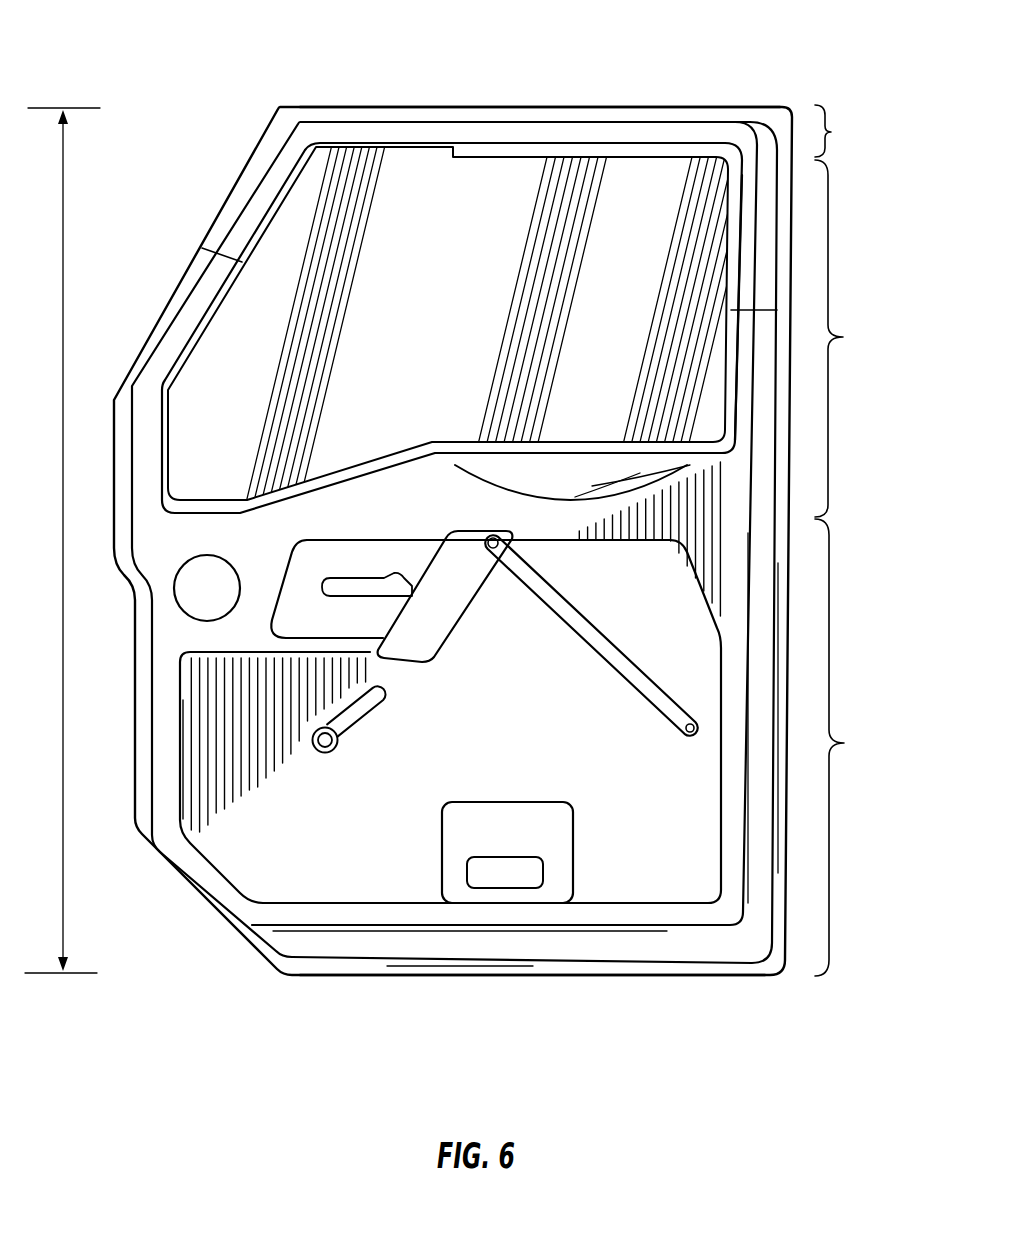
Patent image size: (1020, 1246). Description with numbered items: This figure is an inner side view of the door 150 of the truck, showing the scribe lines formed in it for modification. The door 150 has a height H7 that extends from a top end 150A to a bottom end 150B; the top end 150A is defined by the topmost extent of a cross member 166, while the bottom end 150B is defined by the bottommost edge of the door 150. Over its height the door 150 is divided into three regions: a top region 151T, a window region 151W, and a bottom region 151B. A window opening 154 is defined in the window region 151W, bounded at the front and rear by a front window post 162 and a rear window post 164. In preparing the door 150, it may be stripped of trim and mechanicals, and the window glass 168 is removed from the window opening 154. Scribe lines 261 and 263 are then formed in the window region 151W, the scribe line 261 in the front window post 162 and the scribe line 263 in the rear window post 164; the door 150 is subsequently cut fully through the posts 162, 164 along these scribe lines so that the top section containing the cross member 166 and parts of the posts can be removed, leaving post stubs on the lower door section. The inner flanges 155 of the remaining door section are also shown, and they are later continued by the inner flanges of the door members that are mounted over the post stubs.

The door 150 is at (271, 58).
The top end 150A is at (580, 103).
The bottom end 150B is at (505, 975).
The top region 151T is at (851, 131).
The window region 151W is at (860, 338).
The bottom region 151B is at (857, 747).
The window opening 154 is at (507, 424).
The inner flanges 155 is at (736, 214).
The front window post 162 is at (148, 403).
The rear window post 164 is at (742, 372).
The cross member 166 is at (475, 122).
The window glass 168 is at (247, 323).
The scribe line 261 is at (214, 250).
The scribe line 263 is at (750, 303).
The height H7 is at (62, 540).